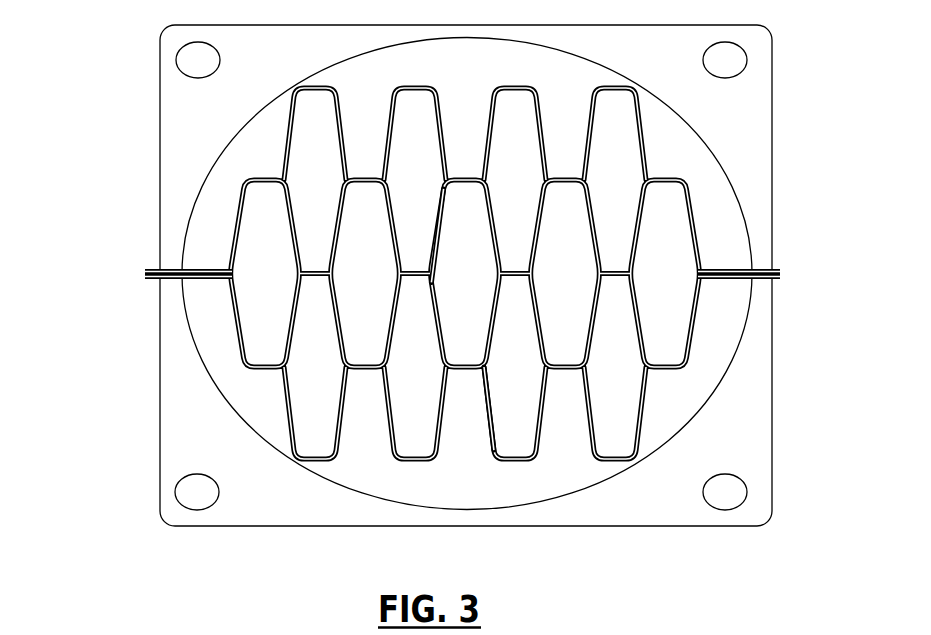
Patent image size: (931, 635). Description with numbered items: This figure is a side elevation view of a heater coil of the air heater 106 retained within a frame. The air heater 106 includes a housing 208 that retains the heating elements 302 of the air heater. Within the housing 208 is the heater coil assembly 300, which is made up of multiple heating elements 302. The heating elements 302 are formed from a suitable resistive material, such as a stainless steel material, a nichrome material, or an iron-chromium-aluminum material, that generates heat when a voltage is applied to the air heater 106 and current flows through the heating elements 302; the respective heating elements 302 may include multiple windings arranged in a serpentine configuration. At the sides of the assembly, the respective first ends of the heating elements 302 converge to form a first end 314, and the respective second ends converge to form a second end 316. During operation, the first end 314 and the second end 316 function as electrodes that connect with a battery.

The air heater 106 is at (762, 32).
The housing 208 is at (203, 150).
The heater coil assembly 300 is at (485, 85).
The heating elements 302 is at (492, 437).
The first end 314 is at (145, 272).
The second end 316 is at (780, 270).